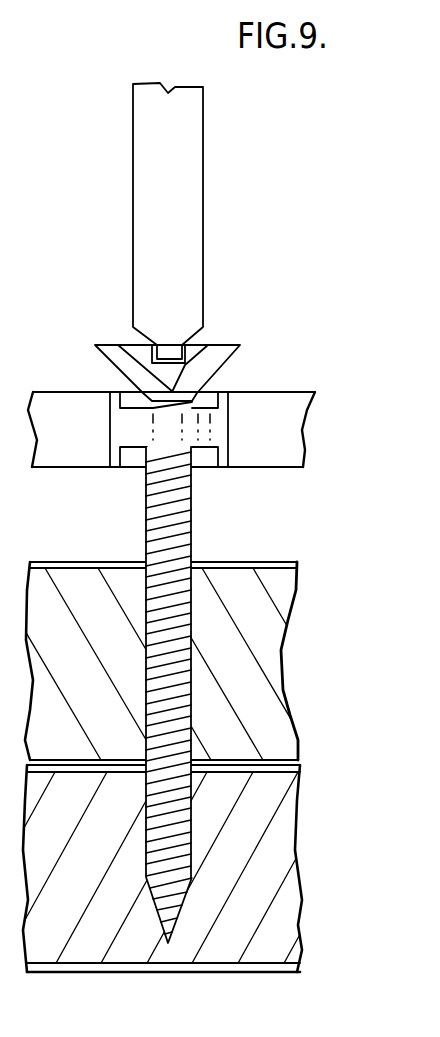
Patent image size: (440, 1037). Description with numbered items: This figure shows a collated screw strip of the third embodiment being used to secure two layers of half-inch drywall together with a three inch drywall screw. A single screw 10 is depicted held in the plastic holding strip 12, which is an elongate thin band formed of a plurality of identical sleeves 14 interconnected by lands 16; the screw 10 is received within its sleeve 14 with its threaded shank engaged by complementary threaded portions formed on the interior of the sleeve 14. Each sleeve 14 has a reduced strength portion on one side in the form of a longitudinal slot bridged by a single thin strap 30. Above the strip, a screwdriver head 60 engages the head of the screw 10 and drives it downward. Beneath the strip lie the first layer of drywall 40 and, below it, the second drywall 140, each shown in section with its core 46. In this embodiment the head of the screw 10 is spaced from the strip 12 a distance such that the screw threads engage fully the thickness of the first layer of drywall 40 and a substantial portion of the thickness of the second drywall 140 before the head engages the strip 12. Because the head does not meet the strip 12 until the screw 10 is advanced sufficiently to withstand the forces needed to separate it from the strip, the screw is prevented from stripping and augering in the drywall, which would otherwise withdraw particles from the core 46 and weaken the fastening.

The screw 10 is at (224, 331).
The plastic holding strip 12 is at (75, 380).
The sleeve 14 is at (214, 394).
The land 16 is at (282, 442).
The strap 30 is at (207, 432).
The first layer of drywall 40 is at (250, 650).
The core 46 is at (259, 709).
The screwdriver head 60 is at (196, 206).
The second drywall 140 is at (268, 860).